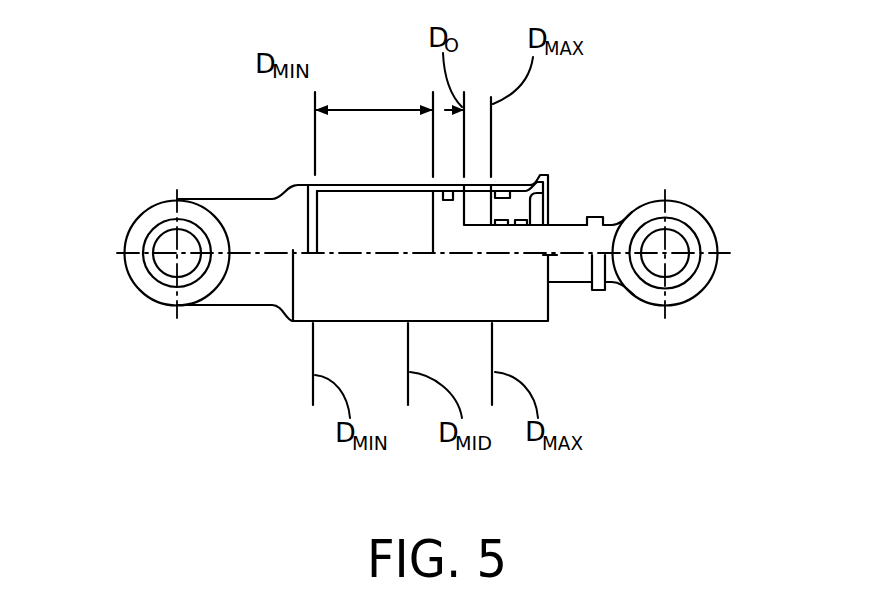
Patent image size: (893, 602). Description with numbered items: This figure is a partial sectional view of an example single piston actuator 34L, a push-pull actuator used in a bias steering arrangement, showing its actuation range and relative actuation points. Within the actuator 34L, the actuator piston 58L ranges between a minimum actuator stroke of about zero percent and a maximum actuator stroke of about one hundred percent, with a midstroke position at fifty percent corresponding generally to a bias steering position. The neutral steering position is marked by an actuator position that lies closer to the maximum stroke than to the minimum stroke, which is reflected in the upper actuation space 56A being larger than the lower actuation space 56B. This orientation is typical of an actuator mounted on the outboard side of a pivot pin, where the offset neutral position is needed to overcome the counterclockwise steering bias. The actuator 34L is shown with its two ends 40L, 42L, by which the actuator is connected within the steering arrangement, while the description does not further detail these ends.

The single piston actuator 34L is at (173, 108).
The first rod end of left actuator 40L is at (228, 195).
The second rod end of left actuator 42L is at (689, 203).
The upper actuation space 56A is at (388, 110).
The lower actuation space 56B is at (491, 108).
The actuator piston 58L is at (449, 240).